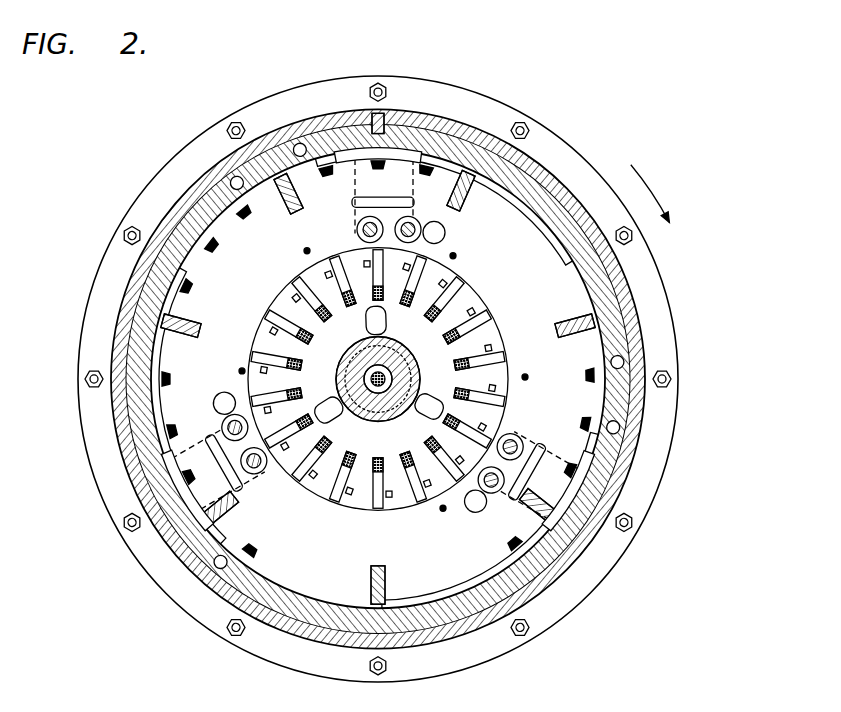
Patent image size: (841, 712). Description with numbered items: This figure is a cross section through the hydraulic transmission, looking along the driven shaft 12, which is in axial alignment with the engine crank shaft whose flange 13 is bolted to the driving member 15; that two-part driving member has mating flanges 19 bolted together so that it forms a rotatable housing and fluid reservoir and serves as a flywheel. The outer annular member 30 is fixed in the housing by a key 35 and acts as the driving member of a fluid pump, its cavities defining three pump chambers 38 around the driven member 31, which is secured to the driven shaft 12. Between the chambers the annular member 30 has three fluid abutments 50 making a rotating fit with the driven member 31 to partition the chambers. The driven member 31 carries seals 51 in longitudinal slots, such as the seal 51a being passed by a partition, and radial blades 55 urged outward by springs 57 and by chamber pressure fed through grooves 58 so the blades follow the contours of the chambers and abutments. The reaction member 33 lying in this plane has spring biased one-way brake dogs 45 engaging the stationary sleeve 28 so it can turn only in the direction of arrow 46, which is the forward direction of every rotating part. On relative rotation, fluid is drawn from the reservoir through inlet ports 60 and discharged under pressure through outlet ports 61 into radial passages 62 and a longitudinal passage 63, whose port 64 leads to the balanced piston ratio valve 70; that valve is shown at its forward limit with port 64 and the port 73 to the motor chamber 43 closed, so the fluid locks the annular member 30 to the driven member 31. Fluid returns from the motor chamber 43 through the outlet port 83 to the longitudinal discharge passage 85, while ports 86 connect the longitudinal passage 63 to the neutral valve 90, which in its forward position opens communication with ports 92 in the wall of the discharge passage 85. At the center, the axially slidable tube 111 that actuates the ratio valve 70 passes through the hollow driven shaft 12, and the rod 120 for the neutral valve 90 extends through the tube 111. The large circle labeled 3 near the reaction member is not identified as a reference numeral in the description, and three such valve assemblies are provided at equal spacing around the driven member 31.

The housing ring 3 is at (312, 269).
The driven shaft 12 is at (390, 379).
The flange 13 is at (450, 247).
The driving member 15 is at (618, 433).
The mating flanges 19 is at (656, 477).
The sleeve 28 is at (408, 362).
The annular member 30 is at (628, 396).
The driven member 31 is at (430, 525).
The reaction member 33 is at (395, 442).
The key 35 is at (383, 118).
The pump chambers 38 is at (486, 206).
The motor chamber 43 is at (278, 308).
The one-way brake dogs 45 is at (384, 318).
The arrow 46 is at (655, 194).
The fluid abutments 50 is at (262, 200).
The seals 51 is at (190, 286).
The seal 51a is at (570, 461).
The radial blades 55 is at (570, 328).
The springs 57 is at (404, 456).
The groove 58 is at (446, 452).
The inlet ports 60 is at (214, 276).
The outlet ports 61 is at (400, 162).
The radial passages 62 is at (354, 190).
The longitudinal passage 63 is at (524, 465).
The port 64 is at (530, 443).
The ratio valve 70 is at (514, 434).
The port 73 is at (358, 233).
The outlet port 83 is at (241, 368).
The longitudinal discharge passage 85 is at (462, 504).
The port 86 is at (492, 489).
The neutral valve 90 is at (488, 493).
The ports 92 is at (478, 499).
The tube 111 is at (352, 372).
The rod 120 is at (364, 380).